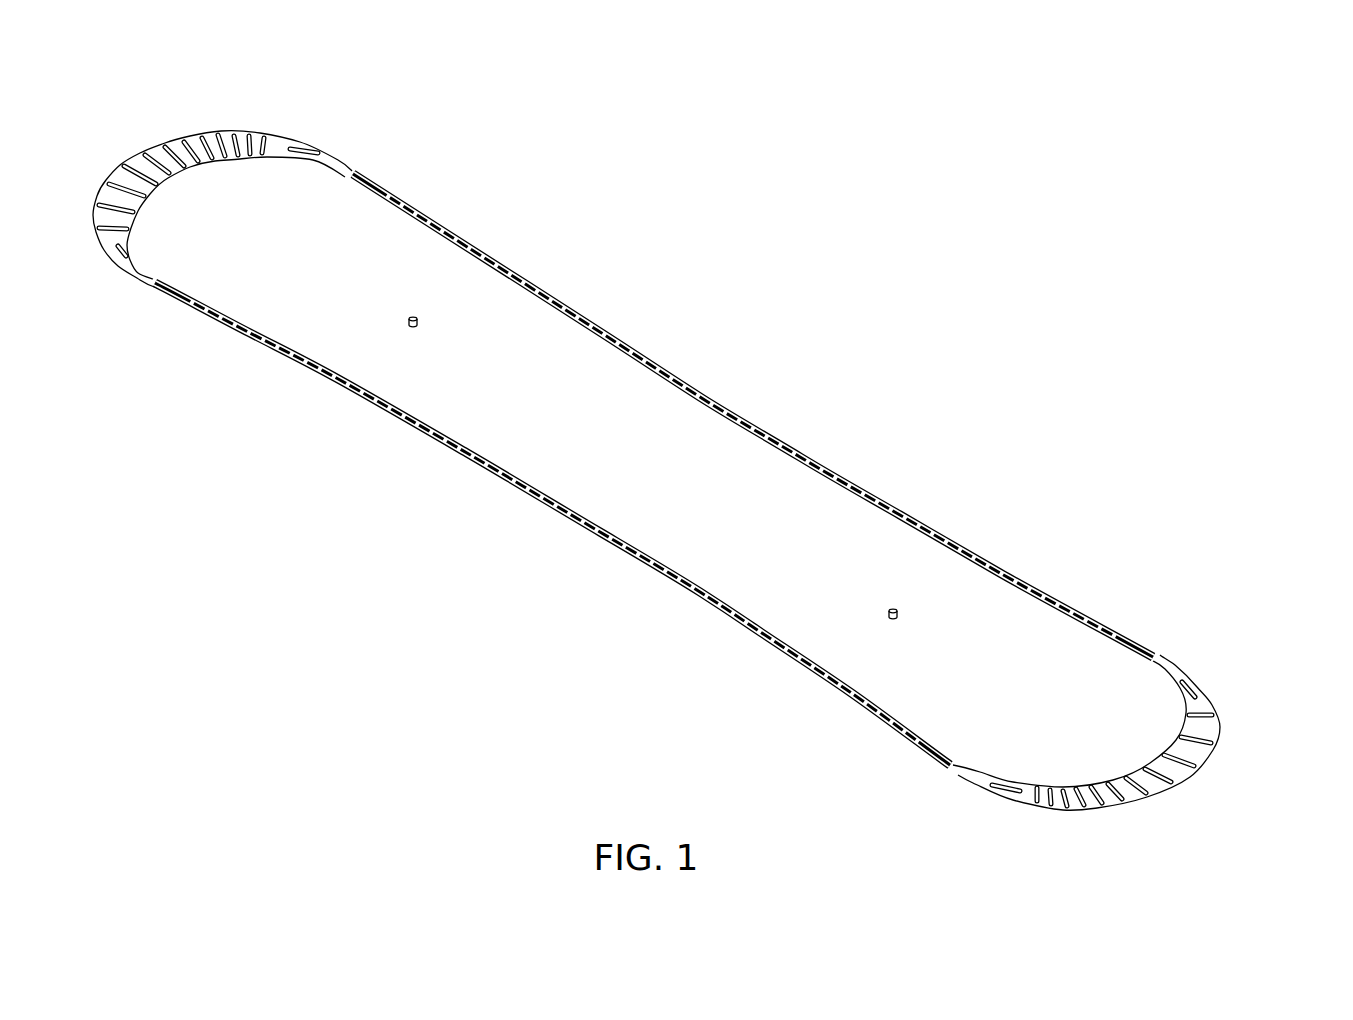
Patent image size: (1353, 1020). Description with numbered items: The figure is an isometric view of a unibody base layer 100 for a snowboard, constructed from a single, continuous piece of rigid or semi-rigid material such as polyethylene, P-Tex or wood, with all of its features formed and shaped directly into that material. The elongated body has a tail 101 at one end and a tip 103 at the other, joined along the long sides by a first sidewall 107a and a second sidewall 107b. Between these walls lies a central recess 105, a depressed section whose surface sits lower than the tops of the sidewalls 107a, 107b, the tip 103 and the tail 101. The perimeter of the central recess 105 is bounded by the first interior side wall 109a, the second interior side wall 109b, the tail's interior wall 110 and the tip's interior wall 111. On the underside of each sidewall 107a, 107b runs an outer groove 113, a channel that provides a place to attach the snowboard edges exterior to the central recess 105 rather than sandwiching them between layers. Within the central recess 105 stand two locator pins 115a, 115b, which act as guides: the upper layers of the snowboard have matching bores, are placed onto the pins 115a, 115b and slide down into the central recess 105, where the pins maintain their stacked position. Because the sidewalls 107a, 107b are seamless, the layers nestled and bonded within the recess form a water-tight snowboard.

The unibody base layer 100 is at (835, 186).
The tail 101 is at (155, 142).
The tip 103 is at (1200, 763).
The central recess 105 is at (641, 450).
The first sidewall 107a is at (560, 512).
The second sidewall 107b is at (710, 400).
The first interior side wall 109a is at (610, 534).
The second interior side wall 109b is at (800, 460).
The tail's interior wall 110 is at (200, 170).
The tip's interior wall 111 is at (1170, 733).
The outer groove 113 is at (467, 452).
The locator pin 115a is at (413, 317).
The locator pin 115b is at (895, 609).